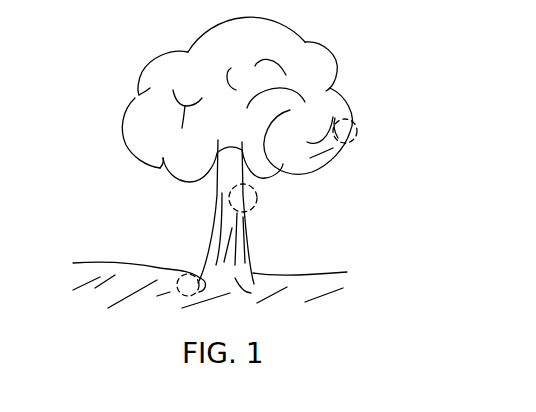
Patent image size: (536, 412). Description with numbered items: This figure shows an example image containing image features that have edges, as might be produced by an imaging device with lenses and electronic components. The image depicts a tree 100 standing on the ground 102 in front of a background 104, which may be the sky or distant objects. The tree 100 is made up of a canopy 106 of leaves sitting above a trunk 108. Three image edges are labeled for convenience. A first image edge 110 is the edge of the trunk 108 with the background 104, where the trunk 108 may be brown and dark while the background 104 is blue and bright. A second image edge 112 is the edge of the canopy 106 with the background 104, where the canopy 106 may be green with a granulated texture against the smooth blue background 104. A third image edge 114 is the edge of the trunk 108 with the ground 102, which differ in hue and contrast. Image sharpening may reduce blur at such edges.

The tree 100 is at (355, 127).
The ground 102 is at (102, 313).
The background 104 is at (73, 128).
The canopy 106 is at (265, 53).
The trunk 108 is at (210, 232).
The first image edge 110 is at (250, 213).
The second image edge 112 is at (360, 62).
The third image edge 114 is at (177, 280).